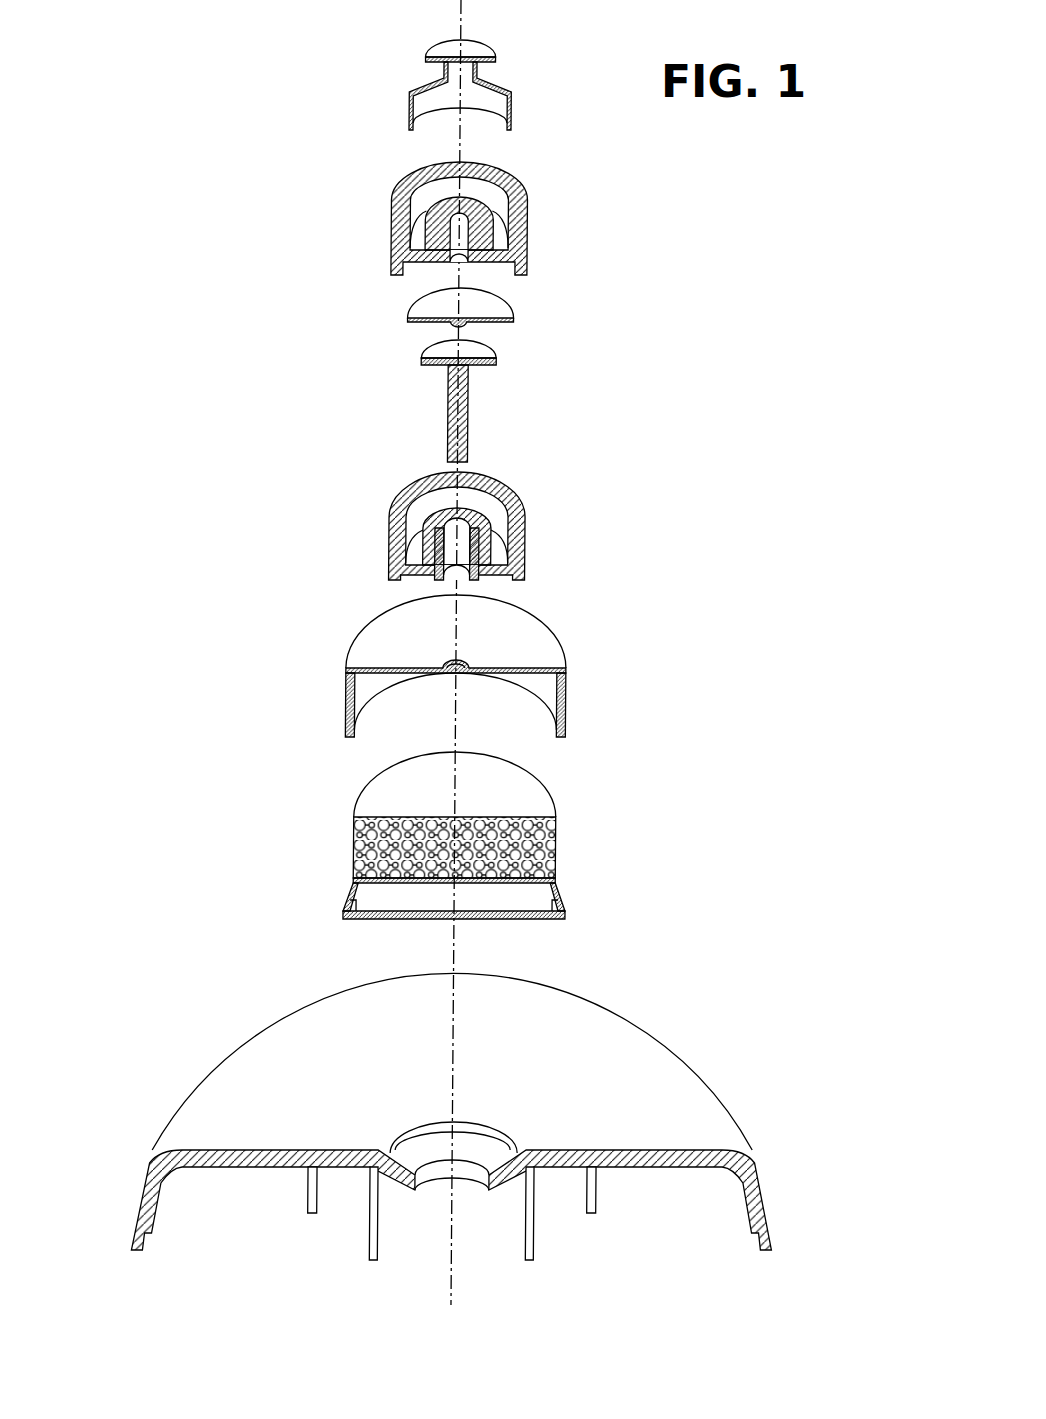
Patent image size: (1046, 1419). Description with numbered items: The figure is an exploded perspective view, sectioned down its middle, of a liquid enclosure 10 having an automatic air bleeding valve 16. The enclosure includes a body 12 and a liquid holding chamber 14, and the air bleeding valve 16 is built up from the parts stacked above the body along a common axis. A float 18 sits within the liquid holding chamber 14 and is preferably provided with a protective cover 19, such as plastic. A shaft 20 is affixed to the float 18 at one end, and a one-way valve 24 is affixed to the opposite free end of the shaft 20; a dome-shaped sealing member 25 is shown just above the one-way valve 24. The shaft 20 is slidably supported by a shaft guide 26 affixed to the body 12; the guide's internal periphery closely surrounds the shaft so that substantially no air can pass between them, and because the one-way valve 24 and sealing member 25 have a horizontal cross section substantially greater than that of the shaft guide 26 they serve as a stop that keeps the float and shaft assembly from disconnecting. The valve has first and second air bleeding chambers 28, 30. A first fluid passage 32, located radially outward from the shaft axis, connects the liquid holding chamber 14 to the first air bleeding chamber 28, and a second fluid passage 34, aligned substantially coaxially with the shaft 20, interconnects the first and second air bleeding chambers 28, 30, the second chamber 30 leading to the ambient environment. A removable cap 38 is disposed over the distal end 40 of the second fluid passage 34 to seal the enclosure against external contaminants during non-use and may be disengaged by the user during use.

The liquid enclosure 10 is at (840, 12).
The body 12 is at (676, 1035).
The liquid holding chamber 14 is at (652, 1222).
The air bleeding valve 16 is at (332, 12).
The float 18 is at (658, 612).
The protective cover 19 is at (573, 698).
The shaft 20 is at (475, 412).
The one-way valve 24 is at (484, 357).
The dome 25 is at (500, 312).
The shaft guide 26 is at (470, 563).
The first air bleeding chamber 28 is at (500, 510).
The second air bleeding chamber 30 is at (493, 187).
The first fluid passage 32 is at (482, 542).
The second fluid passage 34 is at (522, 226).
The removable cap 38 is at (500, 84).
The distal end 40 is at (467, 230).